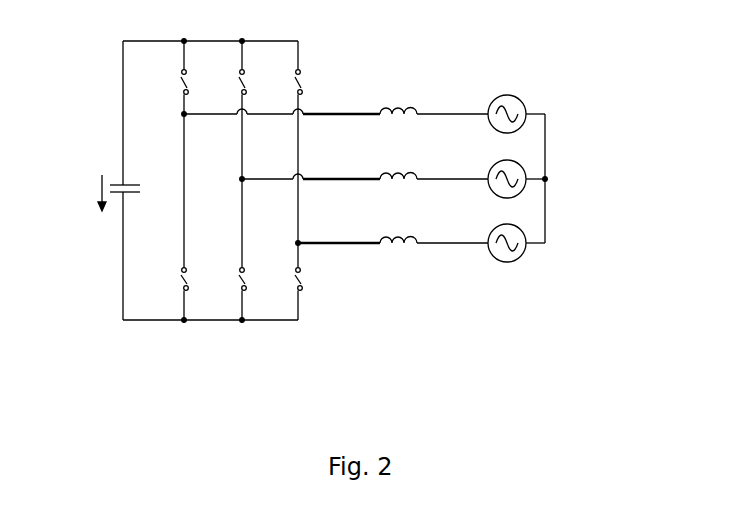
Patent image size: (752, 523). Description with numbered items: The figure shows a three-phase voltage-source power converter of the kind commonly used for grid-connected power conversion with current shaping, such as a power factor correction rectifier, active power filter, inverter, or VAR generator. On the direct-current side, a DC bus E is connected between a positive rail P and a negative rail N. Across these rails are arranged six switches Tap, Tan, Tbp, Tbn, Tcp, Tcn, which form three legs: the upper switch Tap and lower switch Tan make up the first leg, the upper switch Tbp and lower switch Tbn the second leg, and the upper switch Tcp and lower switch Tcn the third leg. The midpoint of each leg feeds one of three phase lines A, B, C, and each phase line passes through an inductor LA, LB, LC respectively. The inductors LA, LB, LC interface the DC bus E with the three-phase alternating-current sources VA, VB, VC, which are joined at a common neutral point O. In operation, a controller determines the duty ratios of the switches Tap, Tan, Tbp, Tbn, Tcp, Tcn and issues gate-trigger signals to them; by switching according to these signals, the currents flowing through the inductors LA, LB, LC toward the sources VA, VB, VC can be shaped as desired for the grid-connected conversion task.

The positive DC bus P is at (203, 34).
The negative DC bus N is at (203, 320).
The DC bus E is at (112, 180).
The switch Tap is at (165, 77).
The switch Tan is at (167, 217).
The switch Tbp is at (223, 110).
The switch Tbn is at (222, 249).
The switch Tcp is at (280, 142).
The switch Tcn is at (281, 281).
The phase A output line A is at (335, 105).
The phase B output line B is at (364, 169).
The phase C output line C is at (392, 233).
The inductor LA is at (398, 99).
The inductor LB is at (398, 159).
The inductor LC is at (398, 228).
The phase A voltage source VA is at (516, 100).
The phase B voltage source VB is at (516, 169).
The phase C voltage source VC is at (516, 233).
The neutral point O is at (556, 178).